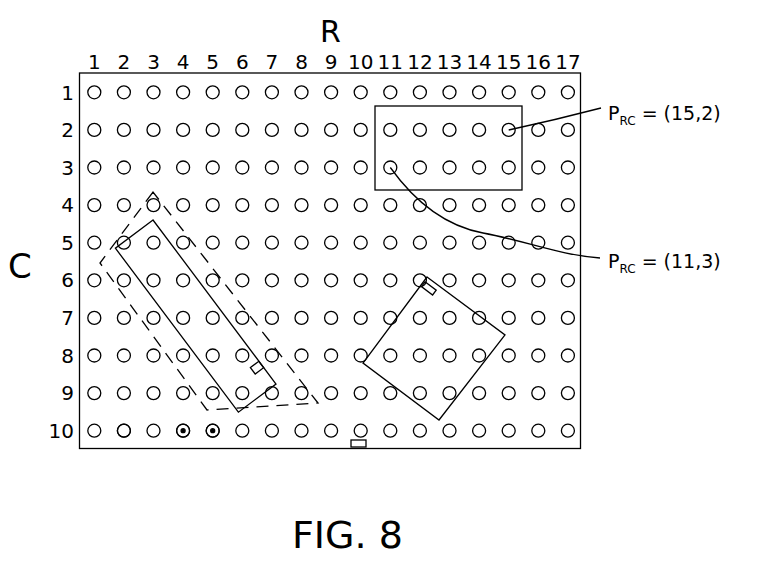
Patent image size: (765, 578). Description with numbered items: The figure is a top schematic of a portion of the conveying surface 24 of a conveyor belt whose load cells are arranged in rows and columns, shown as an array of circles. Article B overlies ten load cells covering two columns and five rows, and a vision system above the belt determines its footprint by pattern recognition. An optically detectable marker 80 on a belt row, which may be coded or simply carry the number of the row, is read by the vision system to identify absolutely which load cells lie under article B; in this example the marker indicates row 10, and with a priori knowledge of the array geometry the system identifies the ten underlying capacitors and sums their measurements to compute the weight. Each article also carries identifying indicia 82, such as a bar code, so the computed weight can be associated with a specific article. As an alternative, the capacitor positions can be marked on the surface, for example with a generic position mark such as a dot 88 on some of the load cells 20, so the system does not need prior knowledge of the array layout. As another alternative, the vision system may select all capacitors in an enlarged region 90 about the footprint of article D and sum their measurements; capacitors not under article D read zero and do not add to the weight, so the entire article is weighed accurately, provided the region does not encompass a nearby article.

The row 10 is at (493, 442).
The light emitting diode (LED) 20 is at (123, 438).
The conveying surface 24 is at (573, 410).
The optically detectable marker 80 is at (358, 447).
The identifying indicia 82 is at (259, 376).
The dot 88 is at (207, 433).
The enlarged region 90 is at (310, 408).
The article B is at (522, 180).
The article D is at (212, 345).